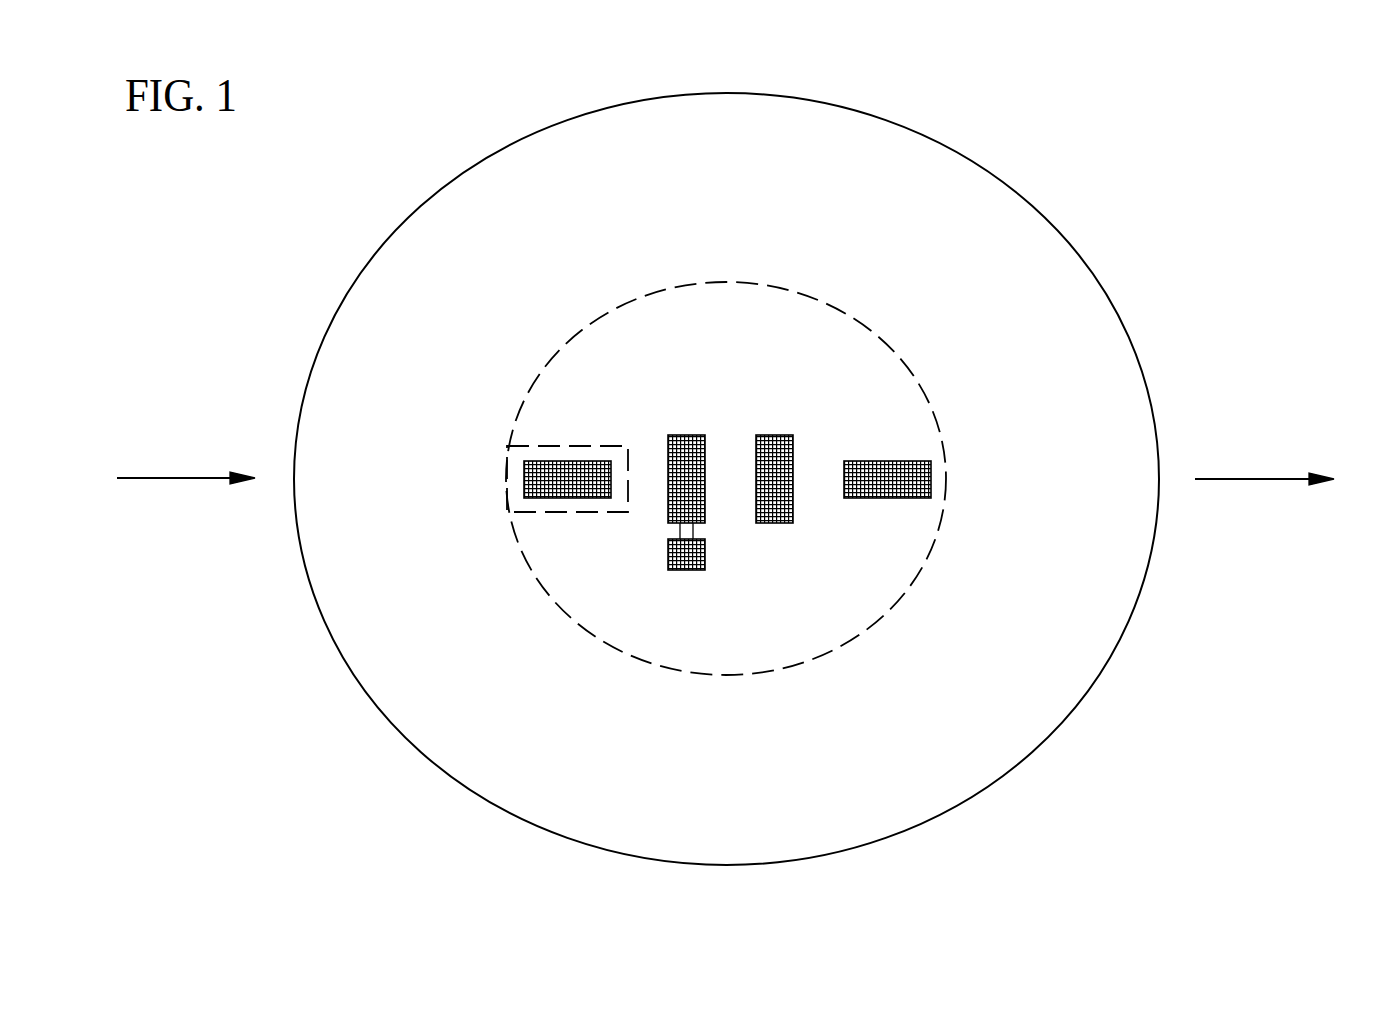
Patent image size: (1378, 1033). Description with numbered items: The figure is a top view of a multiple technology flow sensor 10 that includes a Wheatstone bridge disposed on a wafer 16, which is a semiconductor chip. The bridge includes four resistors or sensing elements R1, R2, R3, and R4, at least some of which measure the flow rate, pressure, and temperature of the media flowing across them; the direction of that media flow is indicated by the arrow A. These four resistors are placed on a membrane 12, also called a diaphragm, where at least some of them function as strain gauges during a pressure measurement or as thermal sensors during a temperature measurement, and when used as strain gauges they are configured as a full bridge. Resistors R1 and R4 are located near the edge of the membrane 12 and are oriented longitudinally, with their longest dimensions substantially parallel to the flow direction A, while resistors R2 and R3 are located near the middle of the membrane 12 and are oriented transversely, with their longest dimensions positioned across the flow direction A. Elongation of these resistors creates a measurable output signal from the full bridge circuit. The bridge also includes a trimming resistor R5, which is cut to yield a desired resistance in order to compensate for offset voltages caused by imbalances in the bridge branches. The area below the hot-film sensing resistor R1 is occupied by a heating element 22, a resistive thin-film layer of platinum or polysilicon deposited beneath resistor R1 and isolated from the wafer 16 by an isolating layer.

The flow sensor 10 is at (1272, 148).
The membrane 12 is at (778, 313).
The wafer 16 is at (1082, 254).
The heating element 22 is at (567, 512).
The resistor R1 is at (548, 461).
The resistor R2 is at (682, 435).
The resistor R3 is at (778, 435).
The resistor R4 is at (902, 461).
The trimming resistor R5 is at (692, 570).
The arrow A is at (170, 478).